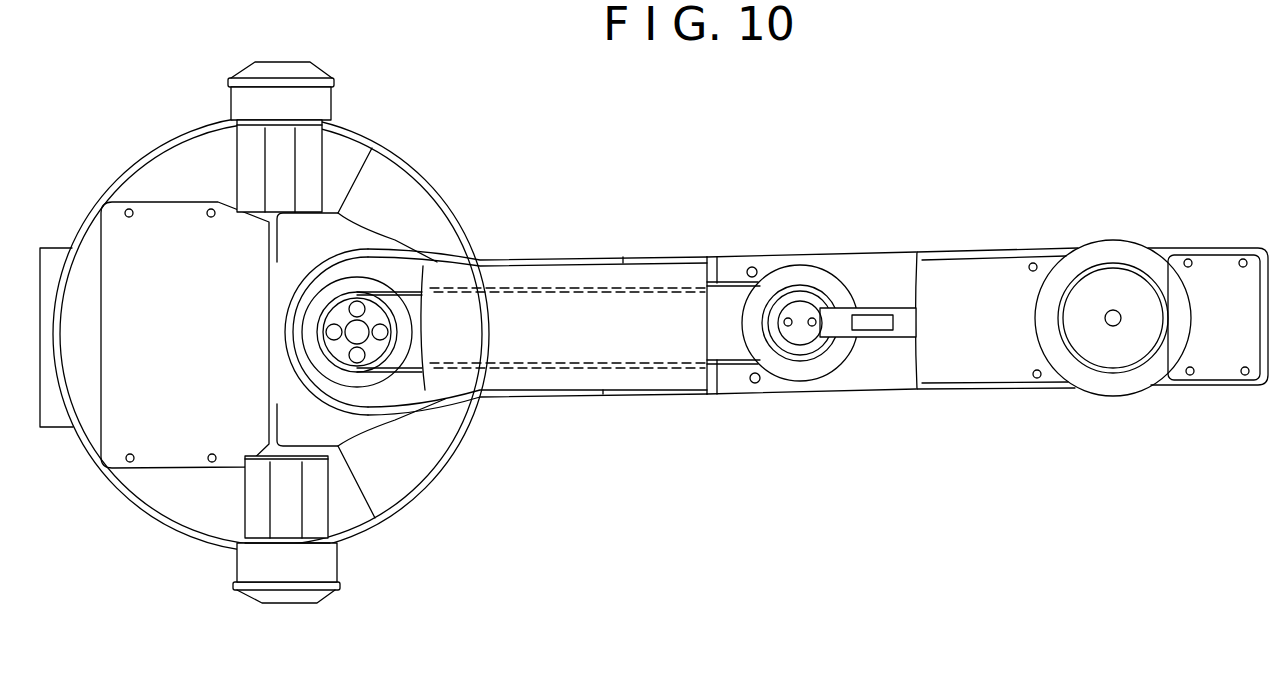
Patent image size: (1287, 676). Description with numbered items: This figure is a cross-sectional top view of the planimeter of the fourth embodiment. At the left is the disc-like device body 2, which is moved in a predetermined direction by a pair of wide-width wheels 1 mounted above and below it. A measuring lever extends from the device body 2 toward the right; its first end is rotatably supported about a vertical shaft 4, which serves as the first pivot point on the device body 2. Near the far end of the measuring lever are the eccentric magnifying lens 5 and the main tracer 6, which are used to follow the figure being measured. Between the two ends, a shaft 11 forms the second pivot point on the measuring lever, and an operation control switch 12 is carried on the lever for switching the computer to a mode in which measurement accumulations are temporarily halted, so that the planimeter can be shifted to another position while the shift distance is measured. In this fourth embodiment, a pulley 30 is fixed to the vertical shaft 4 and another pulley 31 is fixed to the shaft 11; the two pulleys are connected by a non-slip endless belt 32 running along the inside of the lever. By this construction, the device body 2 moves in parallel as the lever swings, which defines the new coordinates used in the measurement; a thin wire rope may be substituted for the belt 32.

The wheels 1 is at (308, 92).
The device body 2 is at (442, 187).
The vertical shaft 4 is at (368, 340).
The eccentric magnifying lens 5 is at (1120, 285).
The main tracer 6 is at (1100, 240).
The shaft 11 is at (802, 312).
The operation control switch 12 is at (878, 337).
The pulley 30 is at (388, 320).
The pulley 31 is at (768, 300).
The non-slip endless belt 32 is at (628, 286).